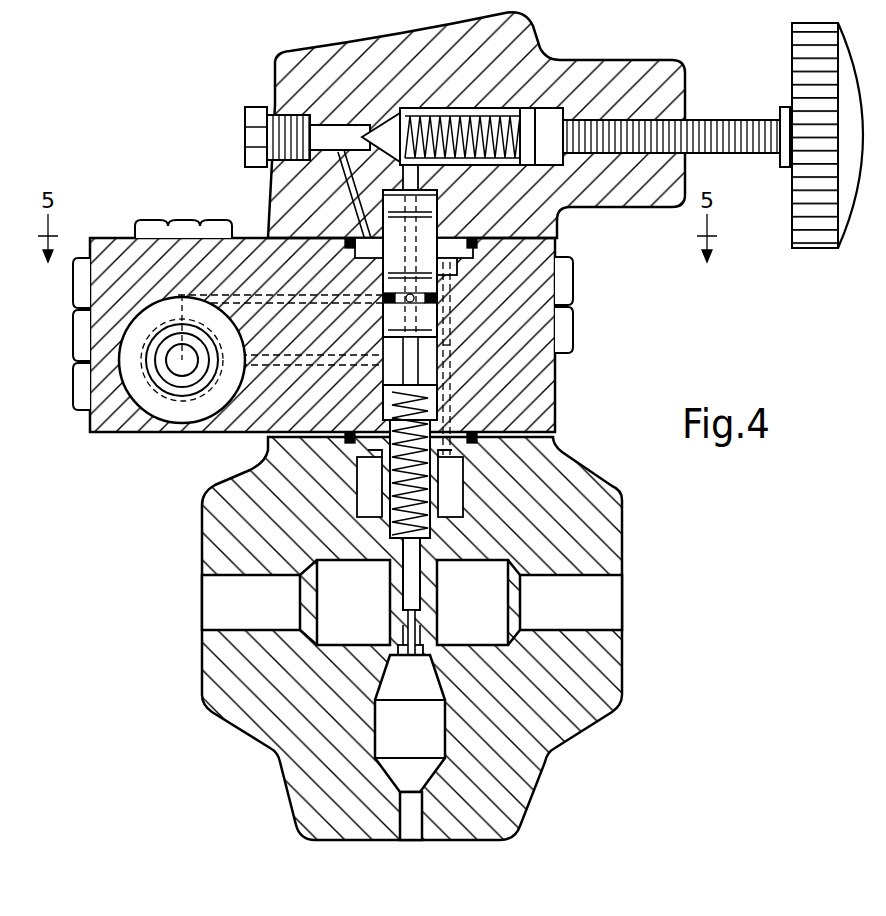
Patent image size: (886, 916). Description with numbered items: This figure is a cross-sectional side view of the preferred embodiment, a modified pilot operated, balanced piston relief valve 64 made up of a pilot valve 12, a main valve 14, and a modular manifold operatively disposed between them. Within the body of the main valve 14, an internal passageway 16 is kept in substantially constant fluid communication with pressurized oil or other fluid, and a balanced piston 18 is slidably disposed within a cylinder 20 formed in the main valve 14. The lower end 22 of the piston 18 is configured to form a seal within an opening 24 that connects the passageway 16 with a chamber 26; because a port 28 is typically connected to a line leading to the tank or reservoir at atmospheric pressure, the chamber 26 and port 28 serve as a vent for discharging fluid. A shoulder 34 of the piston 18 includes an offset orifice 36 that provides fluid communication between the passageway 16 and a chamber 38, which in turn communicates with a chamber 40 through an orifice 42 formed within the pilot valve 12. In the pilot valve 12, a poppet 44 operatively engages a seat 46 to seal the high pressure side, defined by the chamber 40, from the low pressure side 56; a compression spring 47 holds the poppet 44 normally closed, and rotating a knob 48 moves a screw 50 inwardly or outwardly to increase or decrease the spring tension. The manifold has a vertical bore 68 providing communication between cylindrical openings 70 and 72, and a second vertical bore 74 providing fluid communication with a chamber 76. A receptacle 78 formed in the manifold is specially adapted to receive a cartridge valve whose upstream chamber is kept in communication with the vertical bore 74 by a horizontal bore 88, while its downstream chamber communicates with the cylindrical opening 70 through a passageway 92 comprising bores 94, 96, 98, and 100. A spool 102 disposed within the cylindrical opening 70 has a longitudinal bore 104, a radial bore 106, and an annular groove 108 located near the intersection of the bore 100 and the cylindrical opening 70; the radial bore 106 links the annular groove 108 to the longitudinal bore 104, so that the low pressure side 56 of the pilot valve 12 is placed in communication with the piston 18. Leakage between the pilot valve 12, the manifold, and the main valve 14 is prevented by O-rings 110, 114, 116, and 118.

The pilot valve 12 is at (663, 78).
The main valve 14 is at (598, 704).
The internal passageway 16 is at (236, 613).
The balanced piston 18 is at (422, 600).
The cylinder 20 is at (470, 482).
The lower end 22 is at (420, 640).
The opening 24 is at (400, 637).
The chamber 26 is at (425, 737).
The port 28 is at (412, 832).
The shoulder 34 is at (368, 563).
The offset orifice 36 is at (450, 560).
The chamber 38 is at (465, 506).
The chamber 40 is at (341, 134).
The orifice 42 is at (350, 203).
The poppet 44 is at (368, 136).
The seat 46 is at (403, 110).
The compression spring 47 is at (466, 108).
The knob 48 is at (797, 249).
The screw 50 is at (742, 153).
The low pressure side 56 is at (497, 80).
The modified relief valve 64 is at (564, 797).
The vertical bore 68 is at (407, 372).
The cylindrical opening 70 is at (381, 273).
The cylindrical opening 72 is at (383, 390).
The vertical bore 74 is at (452, 400).
The chamber 76 is at (346, 250).
The receptacle 78 is at (136, 432).
The horizontal bore 88 is at (305, 368).
The passageway 92 is at (185, 236).
The bore 94 is at (160, 307).
The bore 96 is at (192, 290).
The bore 98 is at (236, 290).
The bore 100 is at (280, 310).
The spool 102 is at (432, 226).
The longitudinal bore 104 is at (468, 242).
The radial bore 106 is at (438, 297).
The annular groove 108 is at (440, 318).
The O-ring 110 is at (478, 440).
The O-ring 114 is at (452, 362).
The O-ring 116 is at (455, 262).
The O-ring 118 is at (440, 200).